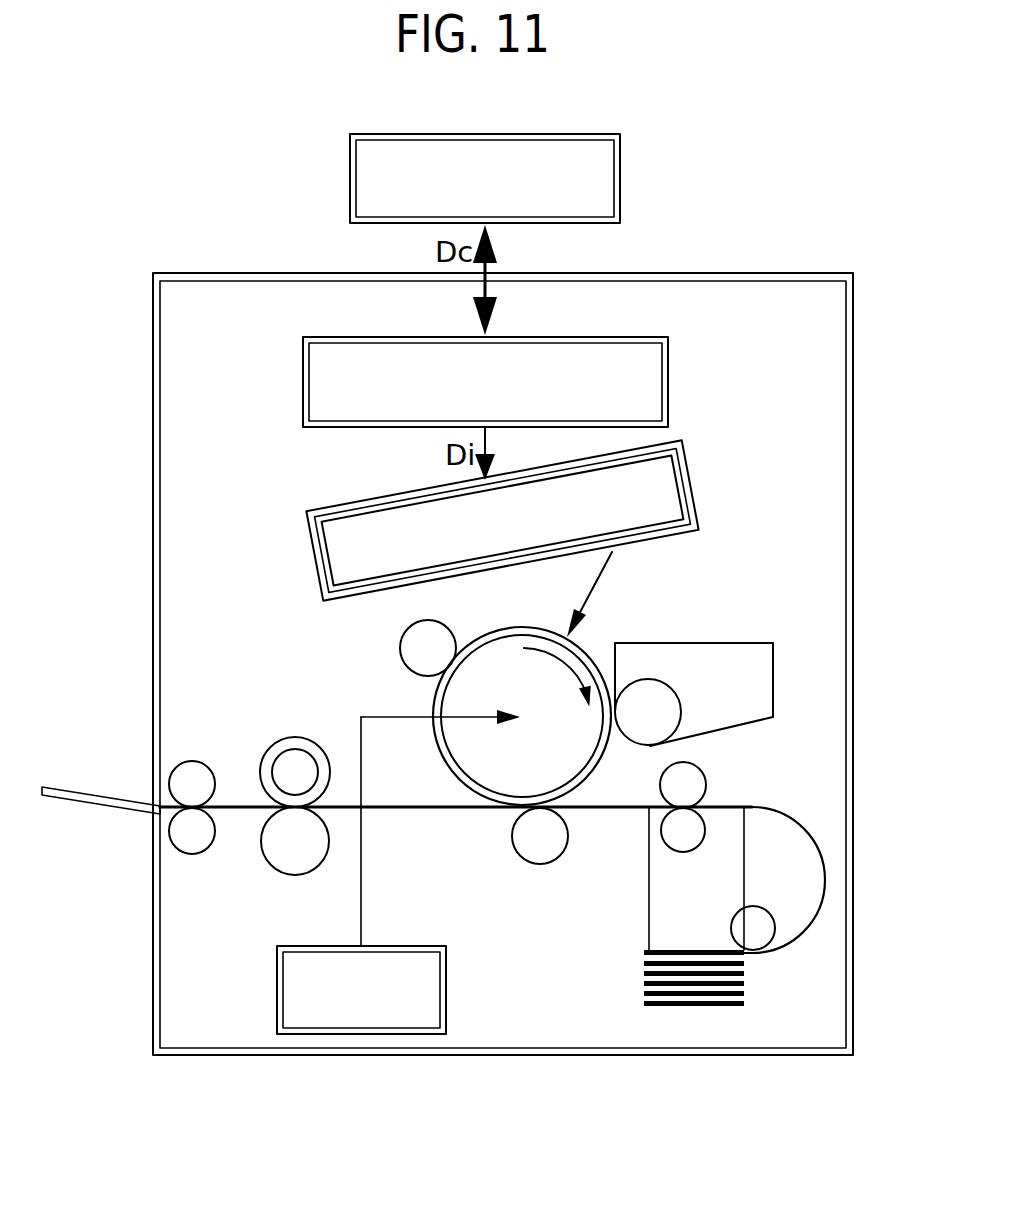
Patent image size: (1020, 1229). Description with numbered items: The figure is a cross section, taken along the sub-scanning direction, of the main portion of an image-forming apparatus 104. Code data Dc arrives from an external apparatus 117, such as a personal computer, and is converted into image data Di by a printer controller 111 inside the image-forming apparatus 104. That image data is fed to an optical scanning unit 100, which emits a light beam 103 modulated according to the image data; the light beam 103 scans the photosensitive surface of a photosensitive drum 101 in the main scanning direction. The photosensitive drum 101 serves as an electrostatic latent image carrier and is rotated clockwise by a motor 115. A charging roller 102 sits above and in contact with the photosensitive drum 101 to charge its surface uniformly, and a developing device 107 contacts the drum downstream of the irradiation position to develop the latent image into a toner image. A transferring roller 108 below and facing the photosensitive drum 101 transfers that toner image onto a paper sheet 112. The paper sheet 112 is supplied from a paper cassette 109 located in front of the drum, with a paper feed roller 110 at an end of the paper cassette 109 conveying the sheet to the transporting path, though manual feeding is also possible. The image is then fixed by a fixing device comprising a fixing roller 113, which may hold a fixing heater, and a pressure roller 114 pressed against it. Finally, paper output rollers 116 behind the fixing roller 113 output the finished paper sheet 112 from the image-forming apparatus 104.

The optical scanning unit 100 is at (667, 472).
The photosensitive drum 101 is at (453, 750).
The charging roller 102 is at (410, 632).
The light beam 103 is at (588, 597).
The image-forming apparatus 104 is at (791, 273).
The developing device 107 is at (773, 672).
The transferring roller 108 is at (538, 864).
The paper cassette 109 is at (644, 1005).
The paper feed roller 110 is at (756, 906).
The printer controller 111 is at (668, 352).
The paper sheet 112 is at (410, 810).
The fixing roller 113 is at (286, 760).
The pressure roller 114 is at (270, 850).
The motor 115 is at (277, 968).
The paper output rollers 116 is at (192, 765).
The external apparatus 117 is at (622, 156).